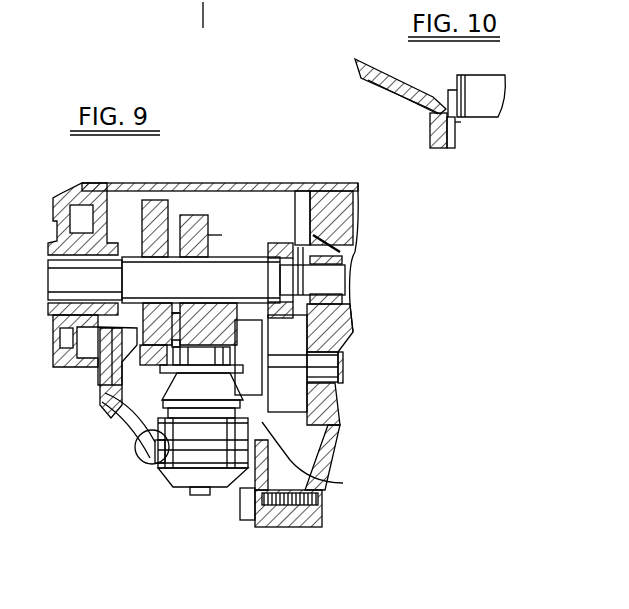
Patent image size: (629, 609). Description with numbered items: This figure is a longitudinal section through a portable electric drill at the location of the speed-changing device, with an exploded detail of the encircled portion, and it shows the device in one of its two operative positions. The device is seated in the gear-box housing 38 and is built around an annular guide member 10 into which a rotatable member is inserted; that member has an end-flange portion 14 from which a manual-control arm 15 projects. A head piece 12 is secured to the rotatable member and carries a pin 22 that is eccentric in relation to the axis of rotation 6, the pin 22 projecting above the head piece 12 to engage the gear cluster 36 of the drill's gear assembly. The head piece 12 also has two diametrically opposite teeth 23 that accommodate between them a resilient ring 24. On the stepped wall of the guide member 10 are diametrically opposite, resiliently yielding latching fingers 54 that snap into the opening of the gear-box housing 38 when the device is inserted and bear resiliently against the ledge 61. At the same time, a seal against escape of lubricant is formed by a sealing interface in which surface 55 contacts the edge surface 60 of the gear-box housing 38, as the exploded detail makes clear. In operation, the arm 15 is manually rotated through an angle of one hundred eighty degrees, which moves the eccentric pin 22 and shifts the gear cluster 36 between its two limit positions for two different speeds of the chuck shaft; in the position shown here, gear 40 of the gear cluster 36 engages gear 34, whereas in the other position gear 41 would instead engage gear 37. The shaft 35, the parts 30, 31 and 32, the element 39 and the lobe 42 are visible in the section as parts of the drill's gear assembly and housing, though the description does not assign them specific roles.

In FIG. 9, the axis of rotation 6 is at (201, 10).
In FIG. 9, the annular guide member 10 is at (160, 462).
In FIG. 10, the annular guide member 10 is at (453, 130).
In FIG. 9, the head piece 12 is at (137, 430).
In FIG. 9, the end-flange portion 14 is at (180, 472).
In FIG. 9, the manual-control arm 15 is at (204, 496).
In FIG. 9, the pin 22 is at (203, 334).
In FIG. 9, the teeth 23 is at (240, 498).
In FIG. 9, the resilient ring 24 is at (227, 440).
In FIG. 9, the housing bore 30 is at (315, 378).
In FIG. 9, the rod 31 is at (307, 362).
In FIG. 9, the housing portion 32 is at (285, 338).
In FIG. 9, the gear 34 is at (108, 407).
In FIG. 9, the shaft 35 is at (222, 268).
In FIG. 9, the gear cluster 36 is at (178, 207).
In FIG. 9, the gear 37 is at (245, 373).
In FIG. 9, the gear-box housing 38 is at (100, 392).
In FIG. 10, the gear-box housing 38 is at (397, 80).
In FIG. 9, the pin 39 is at (158, 464).
In FIG. 9, the gear 40 is at (148, 203).
In FIG. 9, the gear 41 is at (222, 277).
In FIG. 9, the cam 42 is at (205, 215).
In FIG. 9, the latching fingers 54 is at (147, 420).
In FIG. 10, the latching fingers 54 is at (455, 95).
In FIG. 10, the surface 55 is at (465, 127).
In FIG. 10, the edge surface 60 is at (437, 113).
In FIG. 10, the ledge 61 is at (417, 103).